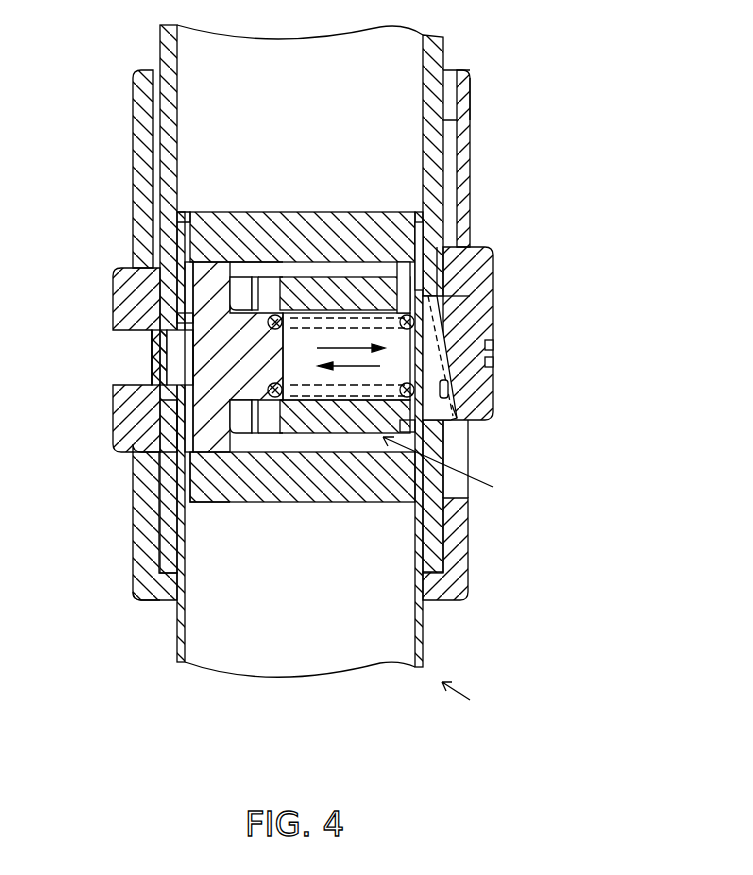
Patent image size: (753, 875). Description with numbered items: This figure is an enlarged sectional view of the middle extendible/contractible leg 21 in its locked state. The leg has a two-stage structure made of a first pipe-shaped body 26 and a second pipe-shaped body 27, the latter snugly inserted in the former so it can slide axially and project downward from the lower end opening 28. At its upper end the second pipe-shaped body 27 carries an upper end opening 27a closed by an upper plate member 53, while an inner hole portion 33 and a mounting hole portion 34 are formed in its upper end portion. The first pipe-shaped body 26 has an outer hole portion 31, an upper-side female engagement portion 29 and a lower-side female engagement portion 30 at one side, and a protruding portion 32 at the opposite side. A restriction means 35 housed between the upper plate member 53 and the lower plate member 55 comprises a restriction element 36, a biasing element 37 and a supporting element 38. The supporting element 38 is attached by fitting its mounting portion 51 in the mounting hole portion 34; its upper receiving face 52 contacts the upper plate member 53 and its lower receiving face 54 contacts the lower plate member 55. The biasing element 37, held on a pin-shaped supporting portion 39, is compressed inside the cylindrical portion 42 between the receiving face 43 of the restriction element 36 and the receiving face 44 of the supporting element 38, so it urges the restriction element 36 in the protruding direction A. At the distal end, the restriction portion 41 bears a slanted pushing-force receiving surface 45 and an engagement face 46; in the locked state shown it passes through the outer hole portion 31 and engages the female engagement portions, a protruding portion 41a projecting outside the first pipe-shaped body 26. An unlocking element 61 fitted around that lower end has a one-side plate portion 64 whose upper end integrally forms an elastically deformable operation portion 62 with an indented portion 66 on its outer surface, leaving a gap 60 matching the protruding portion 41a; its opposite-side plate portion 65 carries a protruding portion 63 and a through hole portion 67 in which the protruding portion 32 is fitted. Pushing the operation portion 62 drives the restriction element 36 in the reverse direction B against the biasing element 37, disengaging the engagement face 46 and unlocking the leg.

The middle extendible/contractible leg 21 is at (472, 697).
The first pipe-shaped body 26 is at (443, 50).
The second pipe-shaped body 27 is at (423, 640).
The upper end opening 27a is at (185, 213).
The lower end opening 28 is at (150, 585).
The upper-side female engagement portion 29 is at (493, 270).
The lower-side female engagement portion 30 is at (460, 424).
The outer hole portion 31 is at (455, 300).
The protruding portion 32 is at (157, 360).
The inner hole portion 33 is at (425, 440).
The mounting hole portion 34 is at (177, 320).
The restriction means 35 is at (451, 468).
The restriction element 36 is at (446, 388).
The biasing element 37 is at (305, 432).
The supporting element 38 is at (177, 407).
The pin-shaped supporting portion 39 is at (305, 330).
The restriction portion 41 is at (445, 335).
The protruding portion 41a is at (458, 416).
The cylindrical portion 42 is at (367, 300).
The receiving face 43 is at (407, 268).
The receiving face 44 is at (285, 292).
The pushing-force receiving surface 45 is at (465, 322).
The engagement face 46 is at (440, 250).
The mounting portion 51 is at (177, 325).
The upper receiving face 52 is at (215, 258).
The upper plate member 53 is at (243, 228).
The lower receiving face 54 is at (222, 456).
The lower plate member 55 is at (260, 490).
The gap 60 is at (450, 165).
The unlocking element 61 is at (470, 118).
The operation portion 62 is at (493, 345).
The protruding portion 63 is at (113, 410).
The one-side plate portion 64 is at (468, 520).
The opposite-side plate portion 65 is at (133, 520).
The indented portion 66 is at (493, 362).
The through hole portion 67 is at (133, 343).
The protruding direction A is at (348, 325).
The reverse direction B is at (338, 375).